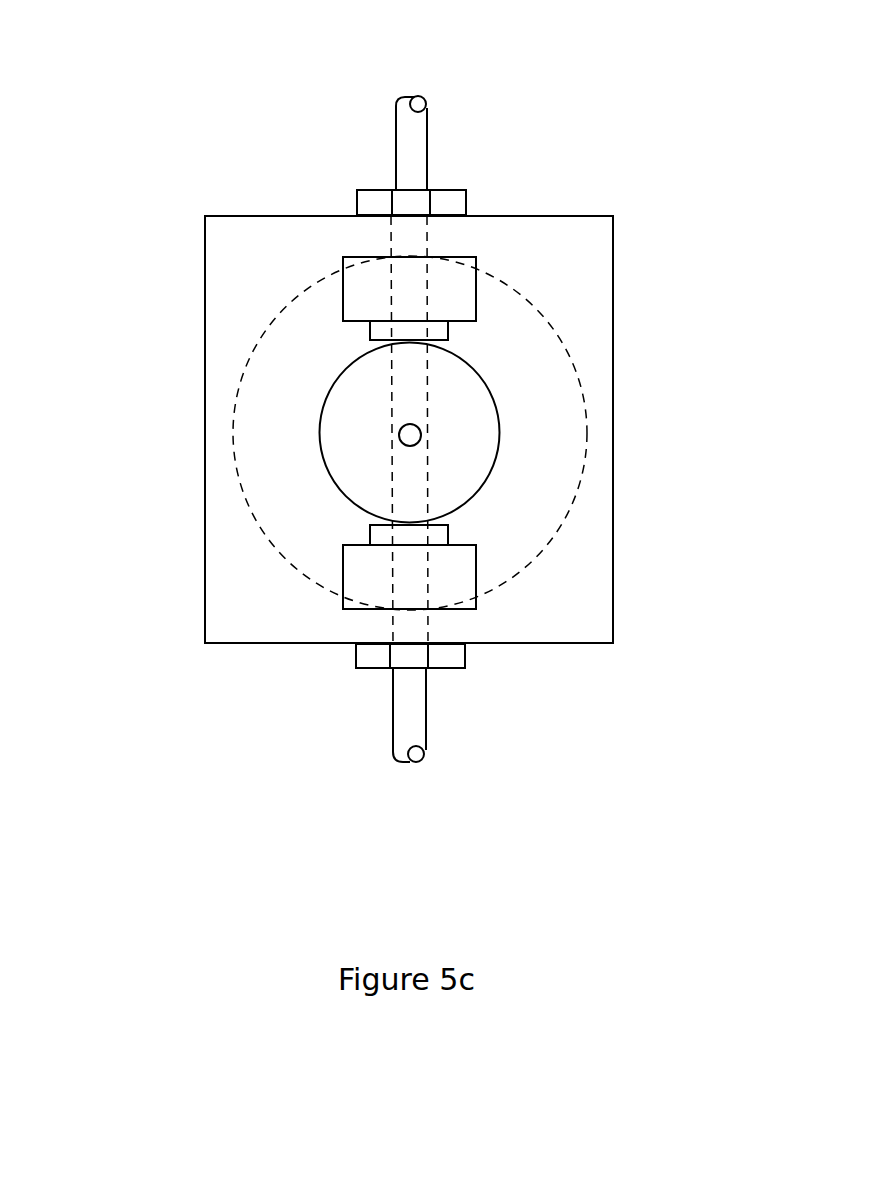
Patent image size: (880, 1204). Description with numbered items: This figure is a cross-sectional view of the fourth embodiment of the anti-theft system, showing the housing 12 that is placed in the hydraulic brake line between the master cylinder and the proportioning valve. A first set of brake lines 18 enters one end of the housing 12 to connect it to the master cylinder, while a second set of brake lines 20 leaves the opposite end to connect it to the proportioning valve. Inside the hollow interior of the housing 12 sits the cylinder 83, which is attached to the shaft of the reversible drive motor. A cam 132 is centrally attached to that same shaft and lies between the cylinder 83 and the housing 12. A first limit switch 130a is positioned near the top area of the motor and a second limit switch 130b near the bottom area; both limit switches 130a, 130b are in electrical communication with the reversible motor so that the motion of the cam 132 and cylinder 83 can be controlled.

The housing 12 is at (253, 609).
The first set of brake lines 18 is at (412, 128).
The second set of brake lines 20 is at (413, 721).
The cylinder 83 is at (273, 440).
The first limit switch 130a is at (368, 302).
The second limit switch 130b is at (450, 585).
The cam 132 is at (462, 453).